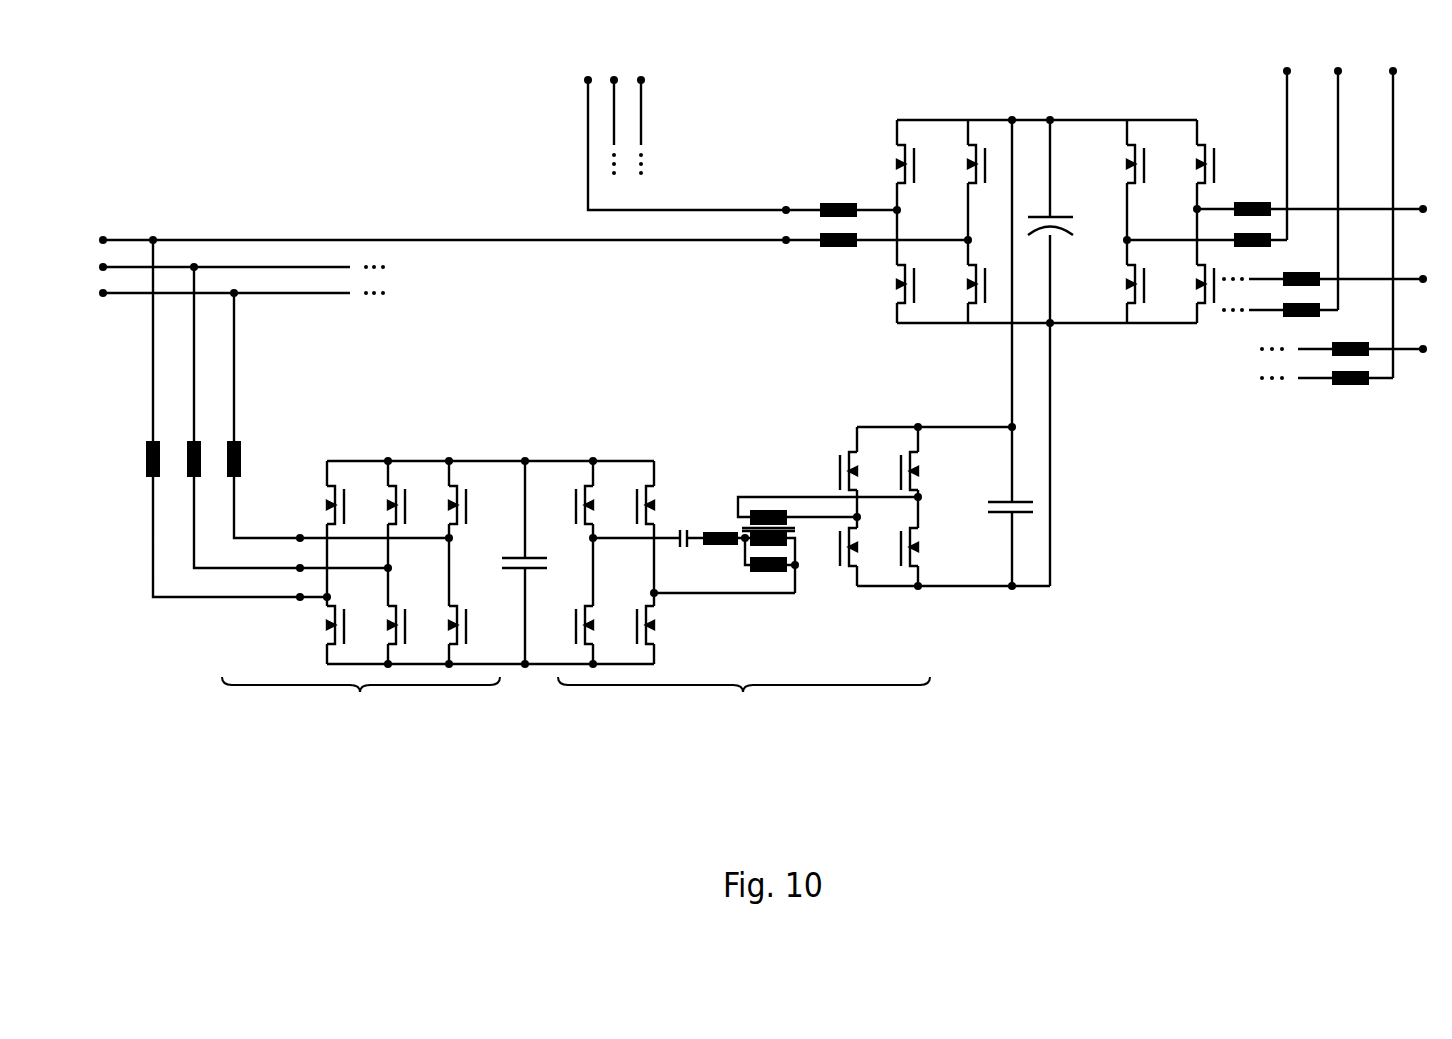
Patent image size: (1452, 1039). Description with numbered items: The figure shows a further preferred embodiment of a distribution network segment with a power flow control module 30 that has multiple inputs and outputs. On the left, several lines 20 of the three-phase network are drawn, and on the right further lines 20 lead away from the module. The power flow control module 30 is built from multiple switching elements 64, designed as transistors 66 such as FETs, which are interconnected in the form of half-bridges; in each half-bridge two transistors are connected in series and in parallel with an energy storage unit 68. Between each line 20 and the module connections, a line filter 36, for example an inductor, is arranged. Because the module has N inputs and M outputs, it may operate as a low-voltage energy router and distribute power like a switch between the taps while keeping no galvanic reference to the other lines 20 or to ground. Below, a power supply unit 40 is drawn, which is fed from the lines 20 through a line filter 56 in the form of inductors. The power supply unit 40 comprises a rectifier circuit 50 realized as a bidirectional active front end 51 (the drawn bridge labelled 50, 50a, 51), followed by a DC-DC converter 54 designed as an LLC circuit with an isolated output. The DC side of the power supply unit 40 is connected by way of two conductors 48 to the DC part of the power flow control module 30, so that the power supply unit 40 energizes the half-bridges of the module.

The line 20 is at (403, 240).
The power flow control module 30 is at (1022, 164).
The line filter 36 is at (833, 202).
The power supply unit 40 is at (576, 634).
The conductors 48 is at (1050, 430).
The rectifier circuit 50 is at (384, 597).
The rectifier bridge 50a is at (384, 597).
The bidirectional active front end 51 is at (384, 597).
The DC-DC converter 54 is at (727, 597).
The line filter 56 is at (146, 463).
The switching elements 64 is at (872, 128).
The transistors 66 is at (897, 160).
The energy storage unit 68 is at (1052, 214).